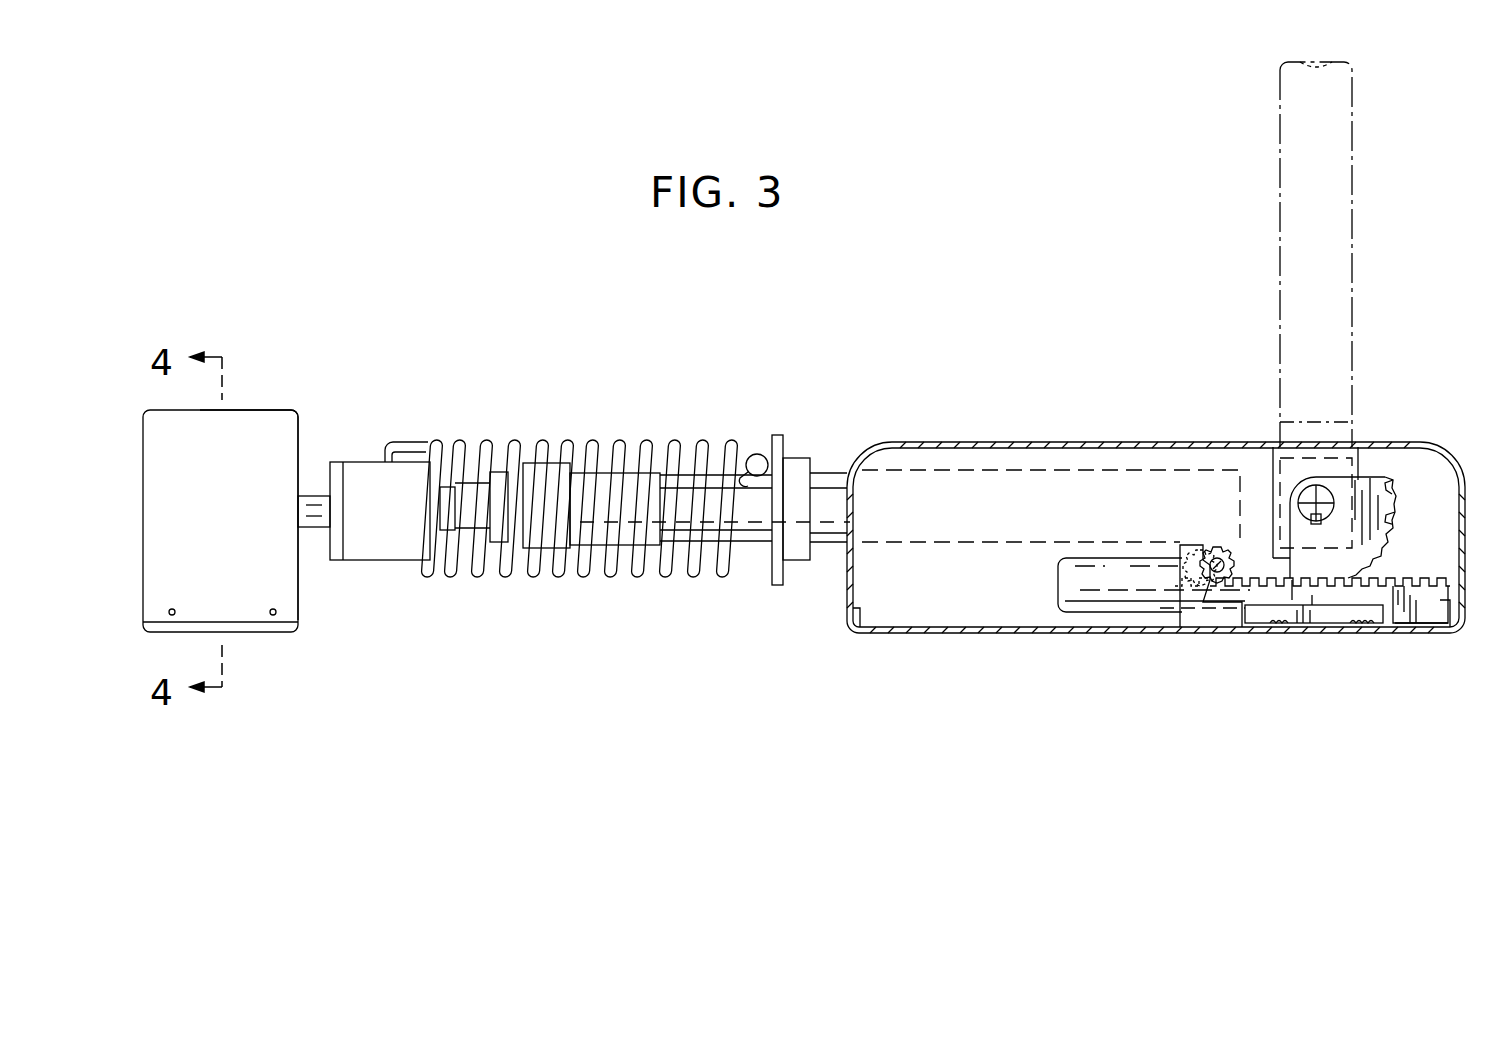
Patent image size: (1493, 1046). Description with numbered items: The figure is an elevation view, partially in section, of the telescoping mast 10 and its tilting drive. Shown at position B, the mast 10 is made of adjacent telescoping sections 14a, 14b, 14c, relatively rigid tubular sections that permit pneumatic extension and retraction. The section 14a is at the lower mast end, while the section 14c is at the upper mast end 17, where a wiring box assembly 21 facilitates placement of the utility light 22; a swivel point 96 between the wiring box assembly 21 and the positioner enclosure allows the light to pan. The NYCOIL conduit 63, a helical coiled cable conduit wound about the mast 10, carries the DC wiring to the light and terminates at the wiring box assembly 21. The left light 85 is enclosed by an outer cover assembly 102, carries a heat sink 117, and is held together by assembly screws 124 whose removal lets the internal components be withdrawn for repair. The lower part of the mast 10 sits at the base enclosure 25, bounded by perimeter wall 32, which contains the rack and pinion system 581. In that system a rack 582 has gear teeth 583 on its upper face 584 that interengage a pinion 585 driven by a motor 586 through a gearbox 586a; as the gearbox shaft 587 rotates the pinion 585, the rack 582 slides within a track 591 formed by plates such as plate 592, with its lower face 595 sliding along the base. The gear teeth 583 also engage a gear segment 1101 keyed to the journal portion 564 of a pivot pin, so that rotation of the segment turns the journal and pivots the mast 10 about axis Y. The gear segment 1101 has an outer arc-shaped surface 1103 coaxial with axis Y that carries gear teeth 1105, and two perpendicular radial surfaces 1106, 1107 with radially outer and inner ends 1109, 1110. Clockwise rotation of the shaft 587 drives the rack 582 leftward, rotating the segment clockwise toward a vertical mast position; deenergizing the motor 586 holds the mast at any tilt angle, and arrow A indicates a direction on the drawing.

The telescoping mast 10 is at (833, 380).
The telescoping section 14a is at (847, 462).
The telescoping section 14b is at (507, 548).
The telescoping section 14c is at (450, 548).
The upper mast end 17 is at (440, 478).
The wiring box assembly 21 is at (358, 470).
The utility light 22 is at (273, 380).
The rectangular enclosure 25 is at (940, 432).
The perimeter wall 32 is at (1003, 446).
The NYCOIL conduit 63 is at (587, 440).
The left light 85 is at (305, 600).
The swivel point 96 is at (313, 492).
The outer cover assembly 102 is at (272, 422).
The heat sink 117 is at (252, 632).
The assembly screws 124 is at (170, 615).
The journal portion 564 is at (1271, 470).
The rack and pinion system 581 is at (1365, 658).
The rack 582 is at (1424, 636).
The gear teeth 583 is at (1425, 589).
The upper face 584 is at (1381, 578).
The pinion 585 is at (1202, 535).
The motor 586 is at (1082, 592).
The gearbox 586a is at (1195, 614).
The gearbox shaft 587 is at (1215, 572).
The track 591 is at (1326, 628).
The plate 592 is at (1297, 623).
The lower face 595 is at (1395, 625).
The gear segment 1101 is at (1372, 468).
The outer arc-shaped surface 1103 is at (1397, 499).
The gear teeth 1105 is at (1397, 525).
The radial surface 1106 is at (1321, 492).
The radial surface 1107 is at (1292, 522).
The radially outer end 1109 is at (1383, 476).
The radially inner end 1110 is at (1306, 495).
The direction A is at (723, 422).
The position B is at (1372, 183).
The axis Y is at (1330, 470).